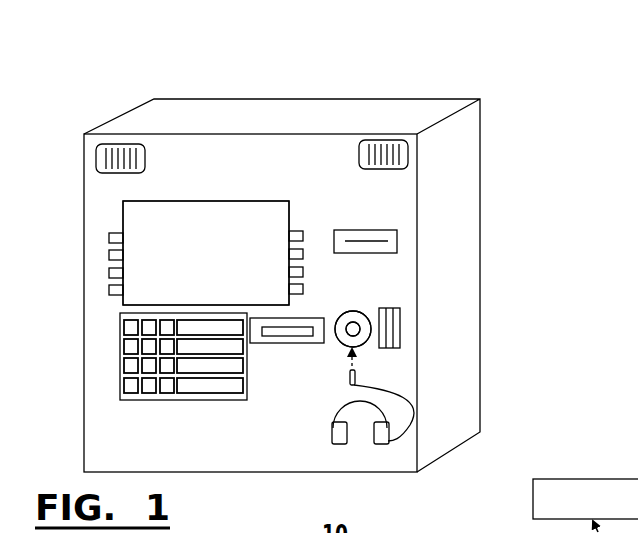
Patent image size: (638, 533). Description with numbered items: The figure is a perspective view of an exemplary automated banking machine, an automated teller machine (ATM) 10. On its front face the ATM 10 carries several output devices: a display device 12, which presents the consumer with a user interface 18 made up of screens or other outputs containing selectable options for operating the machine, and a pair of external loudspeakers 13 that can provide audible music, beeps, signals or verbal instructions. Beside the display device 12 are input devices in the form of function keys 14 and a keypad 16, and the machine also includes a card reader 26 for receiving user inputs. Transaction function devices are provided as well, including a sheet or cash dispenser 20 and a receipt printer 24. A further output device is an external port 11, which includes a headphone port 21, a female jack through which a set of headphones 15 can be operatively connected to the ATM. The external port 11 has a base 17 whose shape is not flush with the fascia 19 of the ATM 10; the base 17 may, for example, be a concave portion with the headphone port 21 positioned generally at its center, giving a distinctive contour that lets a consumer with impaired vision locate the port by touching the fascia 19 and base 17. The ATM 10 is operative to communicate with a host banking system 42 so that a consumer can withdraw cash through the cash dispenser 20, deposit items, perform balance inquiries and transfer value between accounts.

The automated teller machine 10 is at (488, 152).
The external port 11 is at (372, 349).
The display device 12 is at (168, 201).
The external loudspeakers 13 is at (96, 157).
The function keys 14 is at (107, 300).
The headphones 15 is at (332, 433).
The keypad 16 is at (190, 400).
The base 17 is at (358, 318).
The user interface 18 is at (247, 216).
The fascia 19 is at (318, 419).
The cash dispenser 20 is at (273, 343).
The headphone port 21 is at (350, 332).
The receipt printer 24 is at (372, 230).
The card reader 26 is at (400, 327).
The host banking system 42 is at (583, 479).